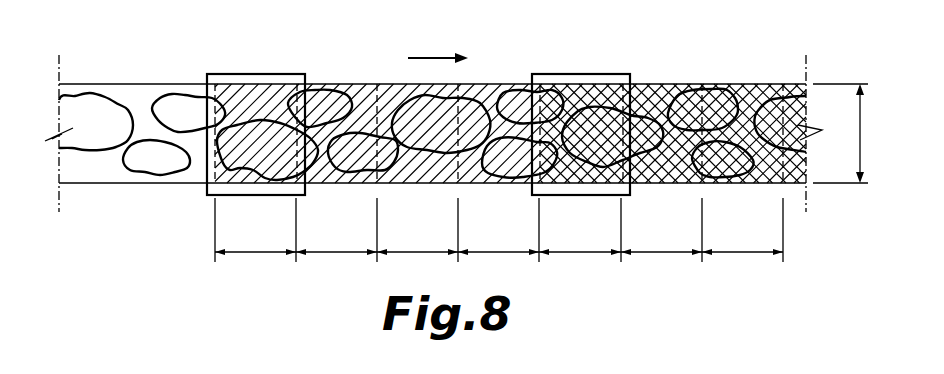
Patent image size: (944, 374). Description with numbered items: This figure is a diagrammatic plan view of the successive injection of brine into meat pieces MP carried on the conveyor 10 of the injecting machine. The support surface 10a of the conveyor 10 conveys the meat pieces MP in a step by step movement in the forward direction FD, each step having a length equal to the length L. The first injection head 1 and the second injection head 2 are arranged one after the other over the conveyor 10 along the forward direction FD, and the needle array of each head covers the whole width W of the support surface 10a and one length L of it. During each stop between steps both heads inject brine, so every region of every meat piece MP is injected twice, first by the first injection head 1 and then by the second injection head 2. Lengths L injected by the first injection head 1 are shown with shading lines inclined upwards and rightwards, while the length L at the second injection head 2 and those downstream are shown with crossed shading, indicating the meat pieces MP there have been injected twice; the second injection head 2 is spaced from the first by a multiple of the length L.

The conveyor 10 is at (150, 185).
The support surface 10a is at (128, 94).
The meat pieces MP is at (182, 102).
The first injection head 1 is at (254, 76).
The second injection head 2 is at (584, 76).
The forward direction FD is at (438, 46).
The width W is at (840, 133).
The length L is at (499, 173).